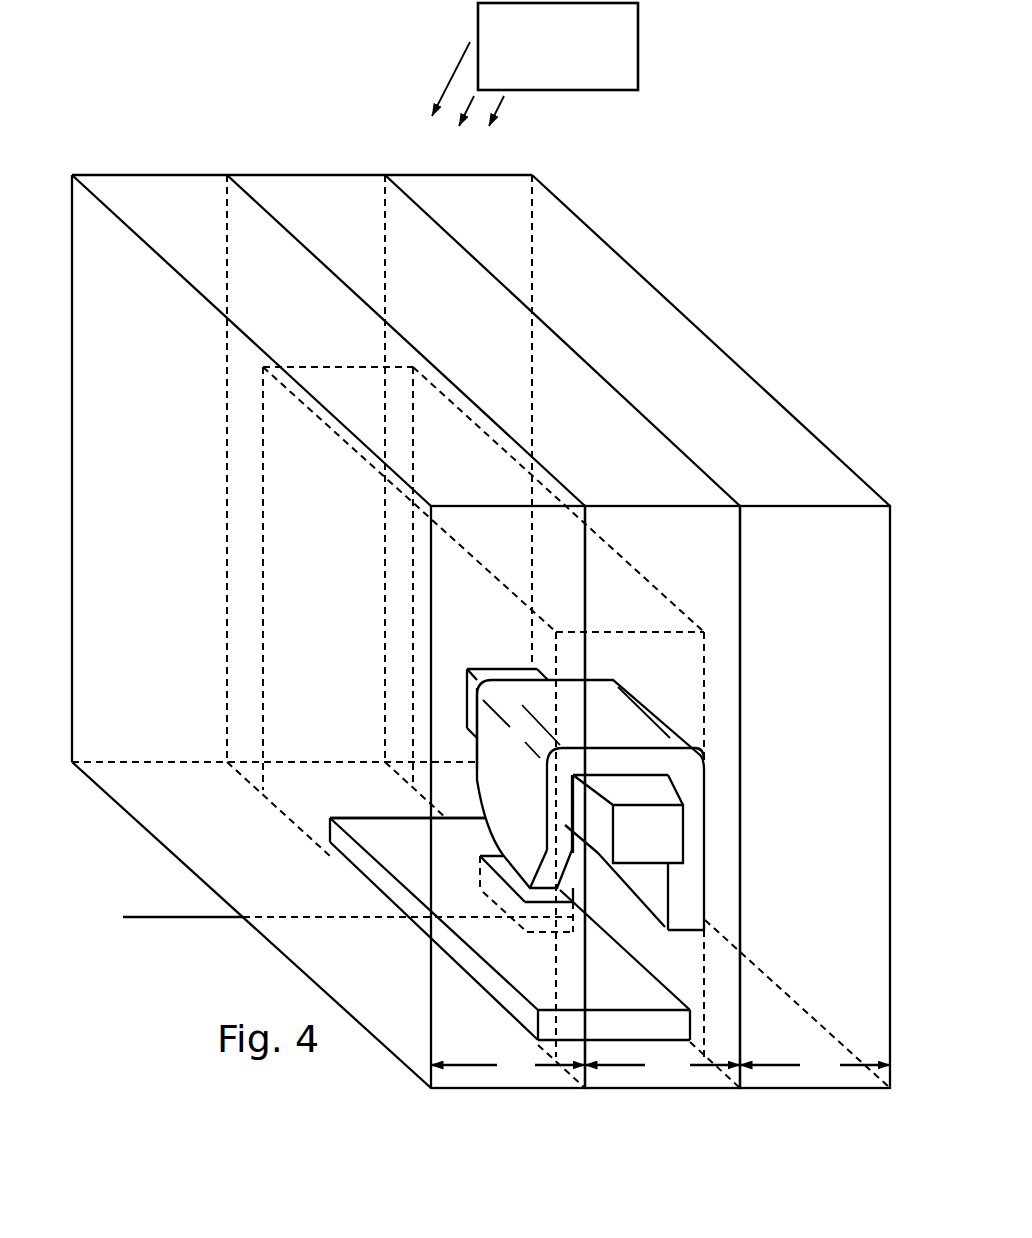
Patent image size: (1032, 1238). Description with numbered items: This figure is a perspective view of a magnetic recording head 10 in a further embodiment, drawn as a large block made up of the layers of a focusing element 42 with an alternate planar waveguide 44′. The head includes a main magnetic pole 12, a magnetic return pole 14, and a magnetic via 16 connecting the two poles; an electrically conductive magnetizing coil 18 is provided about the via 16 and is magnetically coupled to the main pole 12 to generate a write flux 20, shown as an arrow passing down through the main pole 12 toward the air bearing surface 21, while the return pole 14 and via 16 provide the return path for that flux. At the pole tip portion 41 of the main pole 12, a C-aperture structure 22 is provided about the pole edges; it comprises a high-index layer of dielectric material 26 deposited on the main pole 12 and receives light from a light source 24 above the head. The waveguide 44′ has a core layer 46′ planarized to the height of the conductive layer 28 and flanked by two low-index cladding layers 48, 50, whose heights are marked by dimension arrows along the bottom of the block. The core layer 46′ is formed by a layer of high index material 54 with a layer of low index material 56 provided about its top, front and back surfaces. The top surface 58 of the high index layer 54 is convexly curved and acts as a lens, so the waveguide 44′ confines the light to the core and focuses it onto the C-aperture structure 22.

The magnetic recording head 10 is at (502, 792).
The main magnetic pole 12 is at (537, 837).
The magnetic return pole 14 is at (690, 930).
The magnetic via 16 is at (628, 735).
The electrically conductive magnetizing coil 18 is at (662, 852).
The write flux 20 is at (561, 830).
The air bearing surface 21 is at (133, 915).
The C-aperture structure 22 is at (445, 906).
The light source 24 is at (606, 90).
The layer of dielectric material 26 is at (480, 835).
The conductive layer 28 is at (637, 1005).
The pole tip portion 41 is at (500, 892).
The focusing element 42 is at (481, 662).
The planar waveguide 44′ is at (593, 228).
The core layer 46′ is at (740, 1096).
The cladding layer 48 is at (585, 1096).
The cladding layer 50 is at (890, 1096).
The layer of high index material 54 is at (662, 630).
The layer of low index material 56 is at (481, 340).
The top surface 58 is at (491, 669).